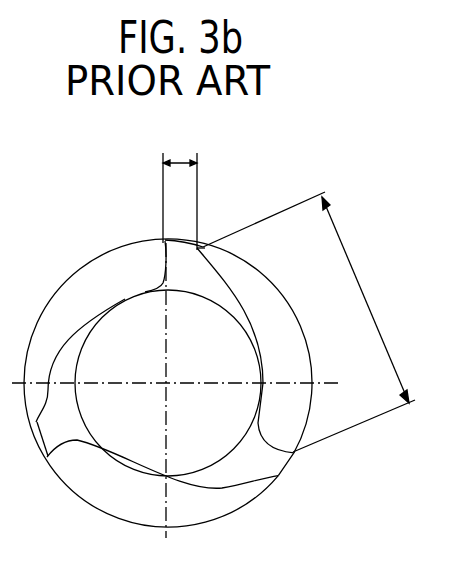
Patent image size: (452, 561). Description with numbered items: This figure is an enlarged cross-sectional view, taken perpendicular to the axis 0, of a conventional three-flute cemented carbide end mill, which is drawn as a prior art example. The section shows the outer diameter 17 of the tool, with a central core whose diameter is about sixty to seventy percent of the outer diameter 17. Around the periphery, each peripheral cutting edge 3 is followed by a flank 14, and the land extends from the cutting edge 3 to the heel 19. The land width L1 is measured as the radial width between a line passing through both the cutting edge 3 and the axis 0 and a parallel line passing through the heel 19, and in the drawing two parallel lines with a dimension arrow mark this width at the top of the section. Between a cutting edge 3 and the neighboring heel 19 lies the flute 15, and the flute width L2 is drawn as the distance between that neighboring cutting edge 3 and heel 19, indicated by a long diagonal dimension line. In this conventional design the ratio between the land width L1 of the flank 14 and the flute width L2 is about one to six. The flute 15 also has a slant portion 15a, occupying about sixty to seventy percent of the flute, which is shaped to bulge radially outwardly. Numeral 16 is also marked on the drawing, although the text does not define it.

The axis 0 is at (166, 383).
The peripheral cutting edge 3 is at (162, 239).
The flank 14 is at (173, 242).
The flute 15 is at (282, 345).
The slant portion 15a is at (245, 303).
The bore 16 is at (190, 436).
The outer diameter 17 is at (76, 491).
The heel 19 is at (205, 248).
The land width L1 is at (188, 161).
The flute width L2 is at (360, 288).